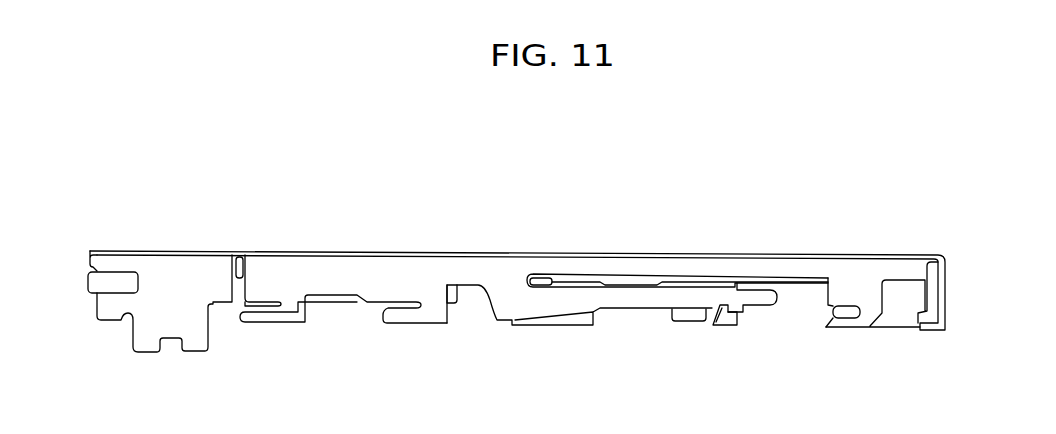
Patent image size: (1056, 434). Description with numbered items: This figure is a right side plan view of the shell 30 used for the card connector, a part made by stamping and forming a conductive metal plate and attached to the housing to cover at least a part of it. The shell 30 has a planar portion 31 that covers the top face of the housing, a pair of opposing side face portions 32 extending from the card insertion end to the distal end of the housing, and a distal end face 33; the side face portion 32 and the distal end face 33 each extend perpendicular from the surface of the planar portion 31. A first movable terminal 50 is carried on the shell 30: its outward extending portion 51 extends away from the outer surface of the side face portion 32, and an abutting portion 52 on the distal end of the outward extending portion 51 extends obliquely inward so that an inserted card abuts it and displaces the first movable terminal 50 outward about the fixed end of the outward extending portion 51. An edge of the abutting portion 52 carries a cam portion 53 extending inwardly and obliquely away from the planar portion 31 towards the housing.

The shell 30 is at (630, 200).
The planar portion 31 is at (427, 253).
The side face portion 32 is at (385, 254).
The distal end face 33 is at (948, 307).
The first movable terminal 50 is at (661, 322).
The outward extending portion 51 is at (567, 293).
The abutting portion 52 is at (695, 293).
The cam portion 53 is at (730, 323).